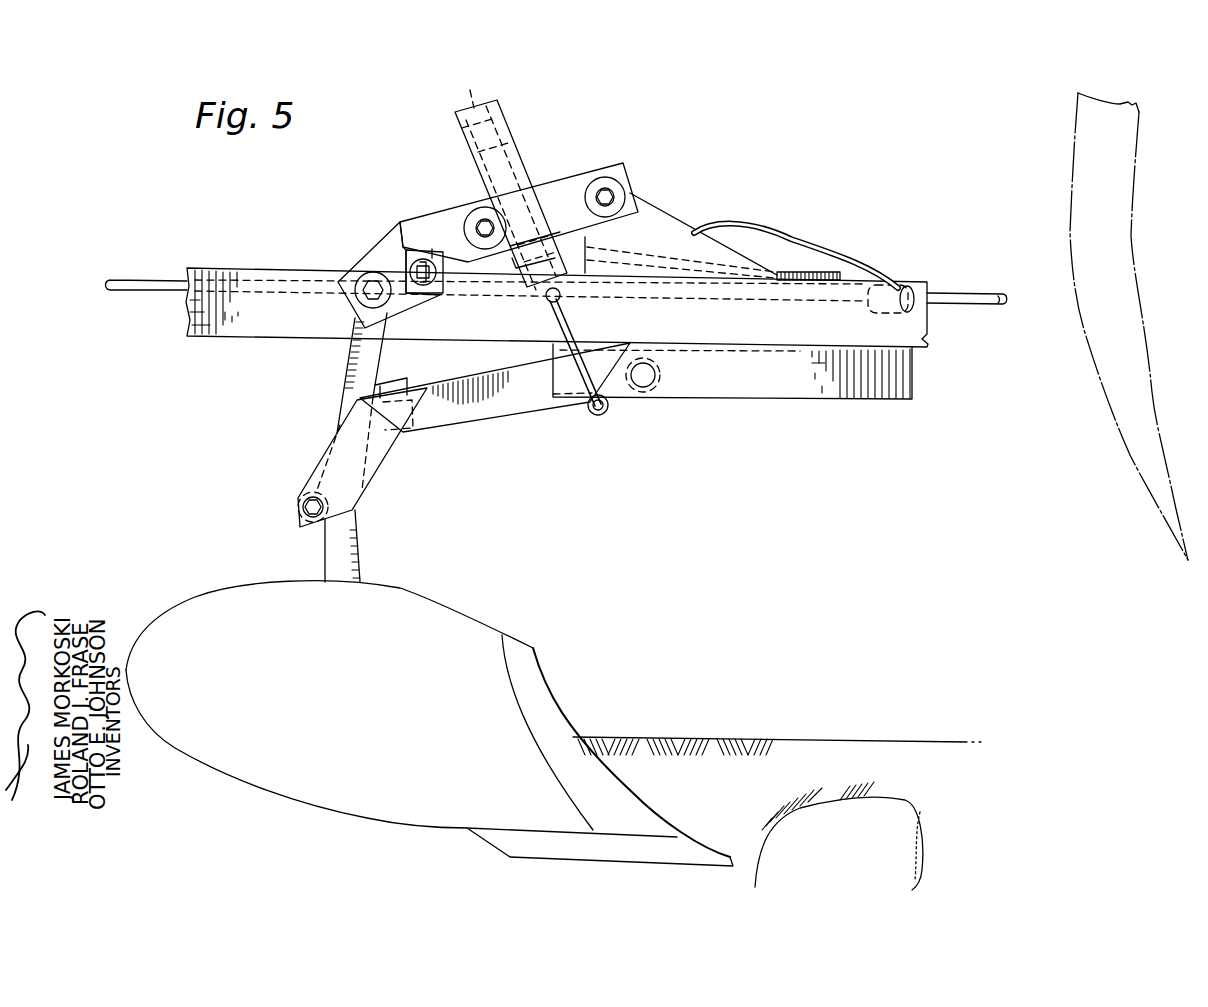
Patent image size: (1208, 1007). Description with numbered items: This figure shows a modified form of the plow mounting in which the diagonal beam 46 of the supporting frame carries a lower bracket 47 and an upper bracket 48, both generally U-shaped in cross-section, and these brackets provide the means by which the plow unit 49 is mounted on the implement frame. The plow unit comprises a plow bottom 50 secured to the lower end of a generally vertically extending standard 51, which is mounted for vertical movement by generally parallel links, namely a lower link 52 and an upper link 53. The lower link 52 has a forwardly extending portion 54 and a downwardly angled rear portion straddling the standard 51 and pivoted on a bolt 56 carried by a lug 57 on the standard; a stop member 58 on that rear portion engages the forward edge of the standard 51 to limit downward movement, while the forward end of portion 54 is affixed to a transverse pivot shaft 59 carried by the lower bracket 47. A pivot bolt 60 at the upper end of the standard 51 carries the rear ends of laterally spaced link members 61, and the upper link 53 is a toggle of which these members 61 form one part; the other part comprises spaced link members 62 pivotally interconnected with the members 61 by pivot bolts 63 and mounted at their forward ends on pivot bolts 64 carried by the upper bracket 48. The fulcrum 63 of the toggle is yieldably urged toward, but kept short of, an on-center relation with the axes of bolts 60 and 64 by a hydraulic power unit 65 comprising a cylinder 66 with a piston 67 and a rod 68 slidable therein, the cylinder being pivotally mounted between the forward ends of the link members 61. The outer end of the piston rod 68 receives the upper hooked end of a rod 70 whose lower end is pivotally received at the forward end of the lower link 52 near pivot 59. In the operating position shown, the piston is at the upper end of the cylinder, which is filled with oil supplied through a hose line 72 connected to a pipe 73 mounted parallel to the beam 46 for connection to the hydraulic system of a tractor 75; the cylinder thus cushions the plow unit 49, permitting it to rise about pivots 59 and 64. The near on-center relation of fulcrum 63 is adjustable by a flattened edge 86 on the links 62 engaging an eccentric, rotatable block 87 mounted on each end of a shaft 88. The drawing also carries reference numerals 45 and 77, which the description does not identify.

The furrow wall 45 is at (895, 800).
The diagonal beam 46 is at (212, 320).
The lower bracket 47 is at (790, 380).
The upper bracket 48 is at (665, 212).
The plow unit 49 is at (290, 508).
The plow bottom 50 is at (177, 612).
The standard 51 is at (356, 370).
The lower link 52 is at (433, 437).
The upper link 53 is at (404, 214).
The forwardly extending portion 54 is at (528, 400).
The bolt 56 is at (300, 518).
The lug 57 is at (300, 460).
The stop member 58 is at (408, 382).
The transverse pivot shaft 59 is at (643, 388).
The pivot bolt 60 is at (356, 292).
The link members 61 is at (376, 262).
The link members 62 is at (556, 185).
The pivot bolts 63 is at (478, 212).
The pivot bolts 64 is at (616, 195).
The hydraulic power unit 65 is at (455, 148).
The cylinder 66 is at (500, 104).
The piston 67 is at (456, 87).
The piston rod 68 is at (546, 296).
The rod 70 is at (566, 325).
The hose line 72 is at (805, 231).
The pipe 73 is at (118, 283).
The tractor 75 is at (1071, 147).
The fitting 77 is at (868, 242).
The flattened edge 86 is at (433, 243).
The block 87 is at (444, 282).
The shaft 88 is at (410, 294).